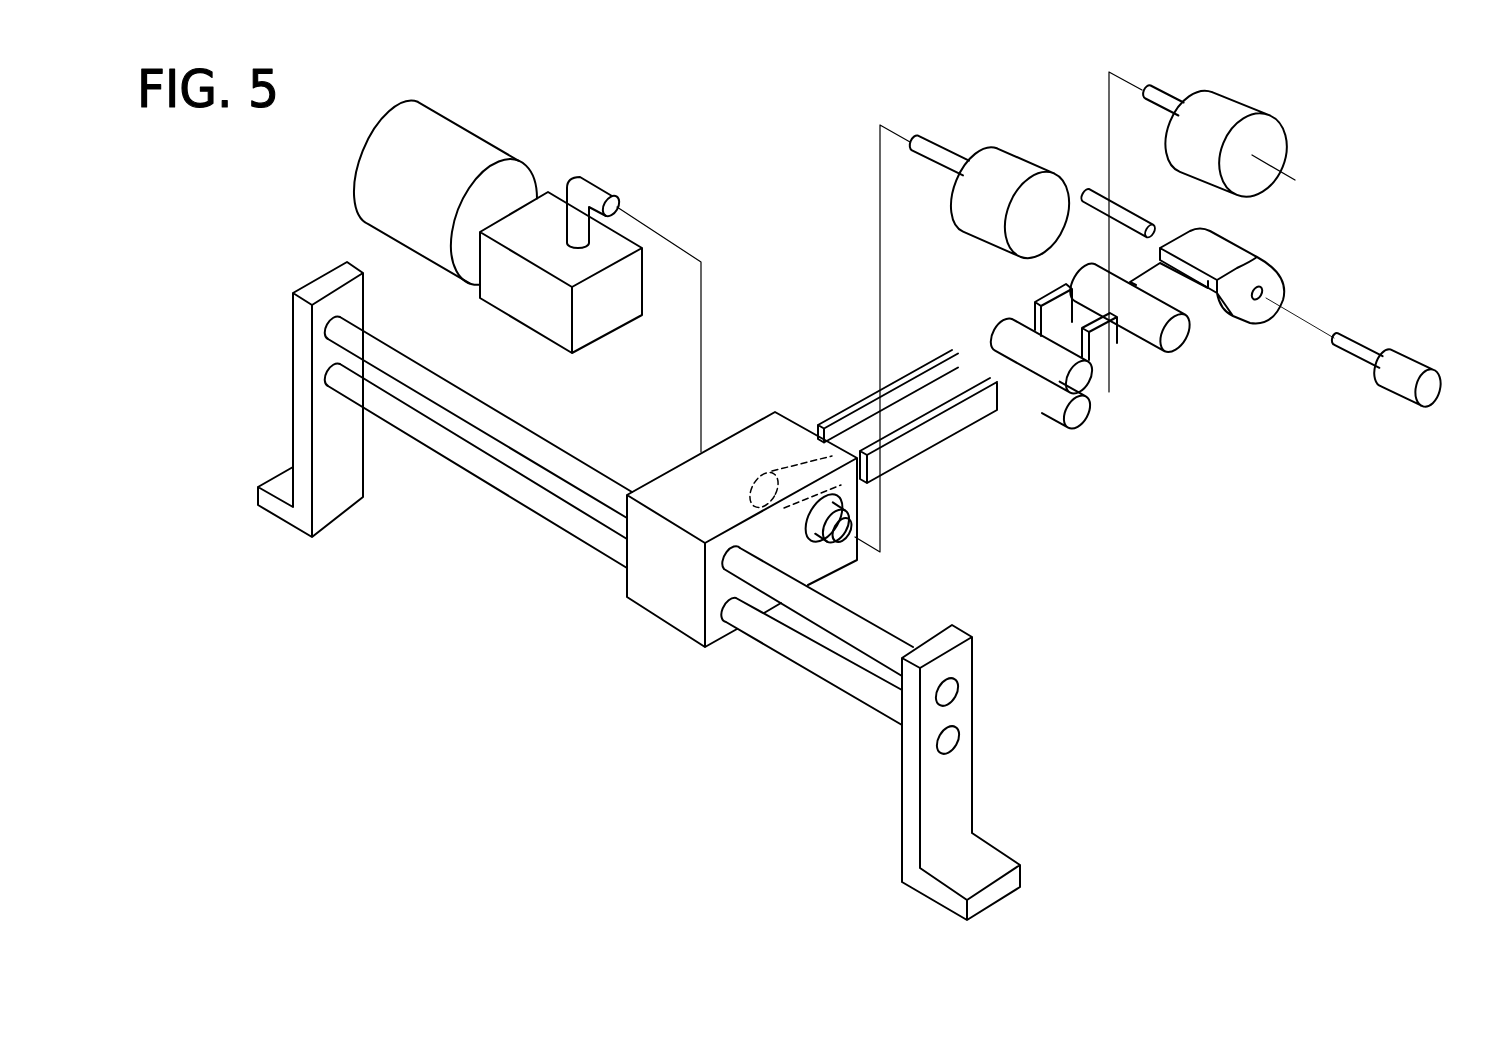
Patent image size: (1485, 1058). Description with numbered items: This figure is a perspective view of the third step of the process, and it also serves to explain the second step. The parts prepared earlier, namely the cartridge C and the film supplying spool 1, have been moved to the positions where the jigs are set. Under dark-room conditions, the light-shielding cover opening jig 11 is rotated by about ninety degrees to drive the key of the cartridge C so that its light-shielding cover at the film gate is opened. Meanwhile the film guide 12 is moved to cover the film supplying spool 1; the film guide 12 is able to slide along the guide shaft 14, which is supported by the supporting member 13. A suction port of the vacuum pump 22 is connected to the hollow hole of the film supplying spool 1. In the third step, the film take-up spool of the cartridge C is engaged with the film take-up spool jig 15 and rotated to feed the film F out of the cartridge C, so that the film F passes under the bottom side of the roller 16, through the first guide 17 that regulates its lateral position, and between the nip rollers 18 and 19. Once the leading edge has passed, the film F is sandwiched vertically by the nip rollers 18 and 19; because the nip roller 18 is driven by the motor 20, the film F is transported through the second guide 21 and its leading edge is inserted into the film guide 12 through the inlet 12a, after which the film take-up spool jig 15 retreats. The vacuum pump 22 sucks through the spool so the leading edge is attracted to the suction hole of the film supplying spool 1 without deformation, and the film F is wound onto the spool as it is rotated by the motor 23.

The film supplying spool 1 is at (768, 465).
The light-shielding cover opening jig 11 is at (1135, 217).
The film guide 12 is at (678, 465).
The inlet 12a is at (843, 530).
The supporting member 13 is at (293, 405).
The guide shaft 14 is at (507, 442).
The film take-up spool jig 15 is at (1412, 358).
The roller 16 is at (1147, 347).
The first guide 17 is at (1113, 350).
The nip roller 18 is at (1032, 300).
The nip roller 19 is at (1035, 412).
The motor 20 is at (1250, 104).
The second guide 21 is at (933, 447).
The vacuum pump 22 is at (477, 128).
The motor 23 is at (1026, 152).
The cartridge C is at (1220, 237).
The film F is at (968, 350).